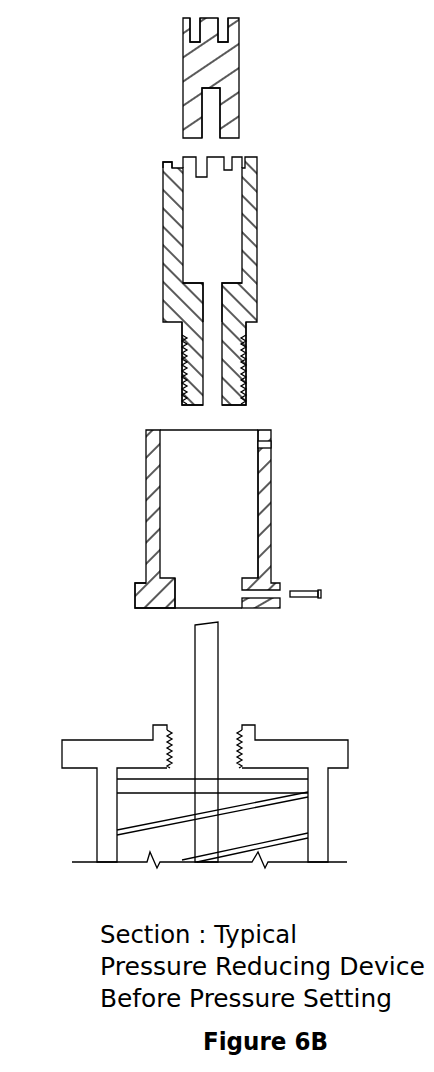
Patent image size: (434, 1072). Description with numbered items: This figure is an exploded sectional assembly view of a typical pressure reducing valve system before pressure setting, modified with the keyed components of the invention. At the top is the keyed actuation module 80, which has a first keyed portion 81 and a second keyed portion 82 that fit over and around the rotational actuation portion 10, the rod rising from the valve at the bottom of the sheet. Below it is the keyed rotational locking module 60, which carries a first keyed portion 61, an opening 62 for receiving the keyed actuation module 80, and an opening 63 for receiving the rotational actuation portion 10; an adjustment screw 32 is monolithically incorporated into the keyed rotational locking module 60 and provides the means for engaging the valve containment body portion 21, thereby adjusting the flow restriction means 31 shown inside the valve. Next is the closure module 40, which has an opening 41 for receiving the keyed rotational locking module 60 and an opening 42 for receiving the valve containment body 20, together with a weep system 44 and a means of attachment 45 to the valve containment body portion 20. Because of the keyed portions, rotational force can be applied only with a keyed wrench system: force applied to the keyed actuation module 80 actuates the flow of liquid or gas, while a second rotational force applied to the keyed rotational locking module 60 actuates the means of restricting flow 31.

The rotational actuation portion 10 is at (203, 654).
The valve containment body 20 is at (332, 752).
The valve containment body portion 21 is at (165, 752).
The flow restriction means 31 is at (133, 787).
The adjustment screw 32 is at (232, 385).
The closure module 40 is at (262, 507).
The opening 41 is at (253, 473).
The opening 42 is at (182, 594).
The weep system 44 is at (268, 445).
The means of attachment 45 is at (324, 594).
The keyed rotational locking module 60 is at (250, 212).
The first keyed portion 61 is at (163, 167).
The opening 62 is at (233, 177).
The opening 63 is at (217, 302).
The keyed actuation module 80 is at (222, 66).
The first keyed portion 81 is at (228, 33).
The second keyed portion 82 is at (212, 116).